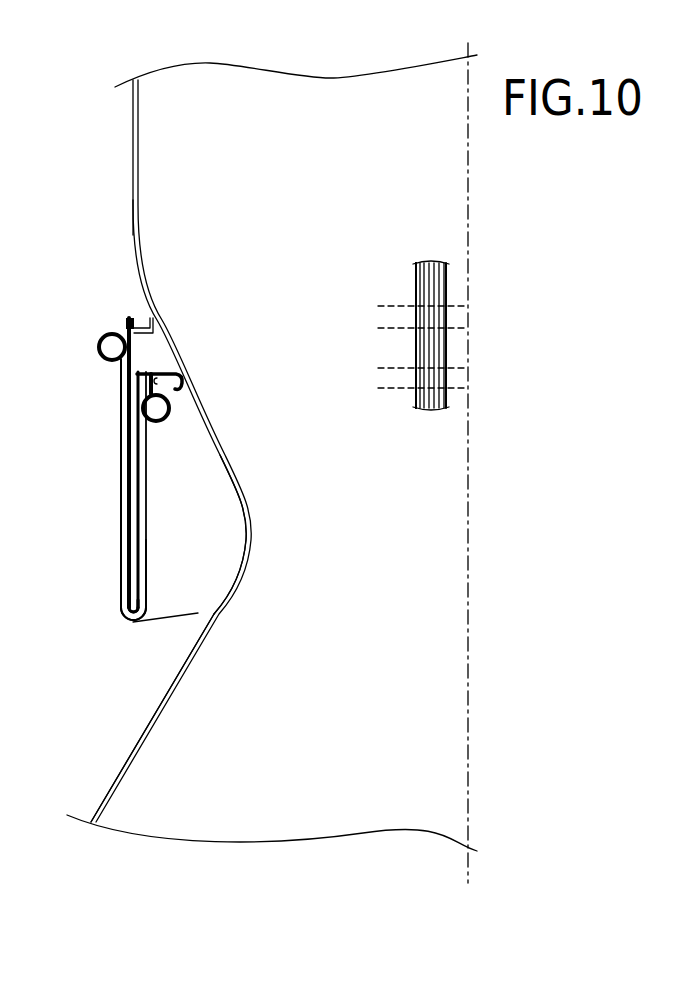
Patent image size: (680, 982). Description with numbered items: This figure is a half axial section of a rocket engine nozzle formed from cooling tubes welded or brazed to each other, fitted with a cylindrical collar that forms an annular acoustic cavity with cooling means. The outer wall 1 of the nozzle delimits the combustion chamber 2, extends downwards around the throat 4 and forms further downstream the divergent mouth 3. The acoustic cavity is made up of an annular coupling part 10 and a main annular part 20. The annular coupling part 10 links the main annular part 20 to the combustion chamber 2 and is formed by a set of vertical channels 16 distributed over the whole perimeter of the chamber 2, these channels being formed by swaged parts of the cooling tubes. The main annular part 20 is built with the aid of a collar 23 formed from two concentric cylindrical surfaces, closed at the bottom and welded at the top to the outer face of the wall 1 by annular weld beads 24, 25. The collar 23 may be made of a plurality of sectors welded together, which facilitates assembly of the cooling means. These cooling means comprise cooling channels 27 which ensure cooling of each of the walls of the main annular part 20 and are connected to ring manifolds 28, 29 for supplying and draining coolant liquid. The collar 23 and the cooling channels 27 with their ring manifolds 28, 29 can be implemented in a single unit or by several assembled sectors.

The outer wall 1 is at (122, 187).
The combustion chamber 2 is at (357, 146).
The divergent mouth 3 is at (122, 765).
The throat 4 is at (247, 522).
The annular coupling part 10 is at (156, 462).
The vertical channels 16 is at (420, 347).
The main annular part 20 is at (130, 475).
The collar 23 is at (133, 621).
The annular weld bead 24 is at (148, 313).
The annular weld bead 25 is at (182, 390).
The cooling channels 27 is at (124, 562).
The ring manifold 28 is at (98, 338).
The ring manifold 29 is at (167, 422).